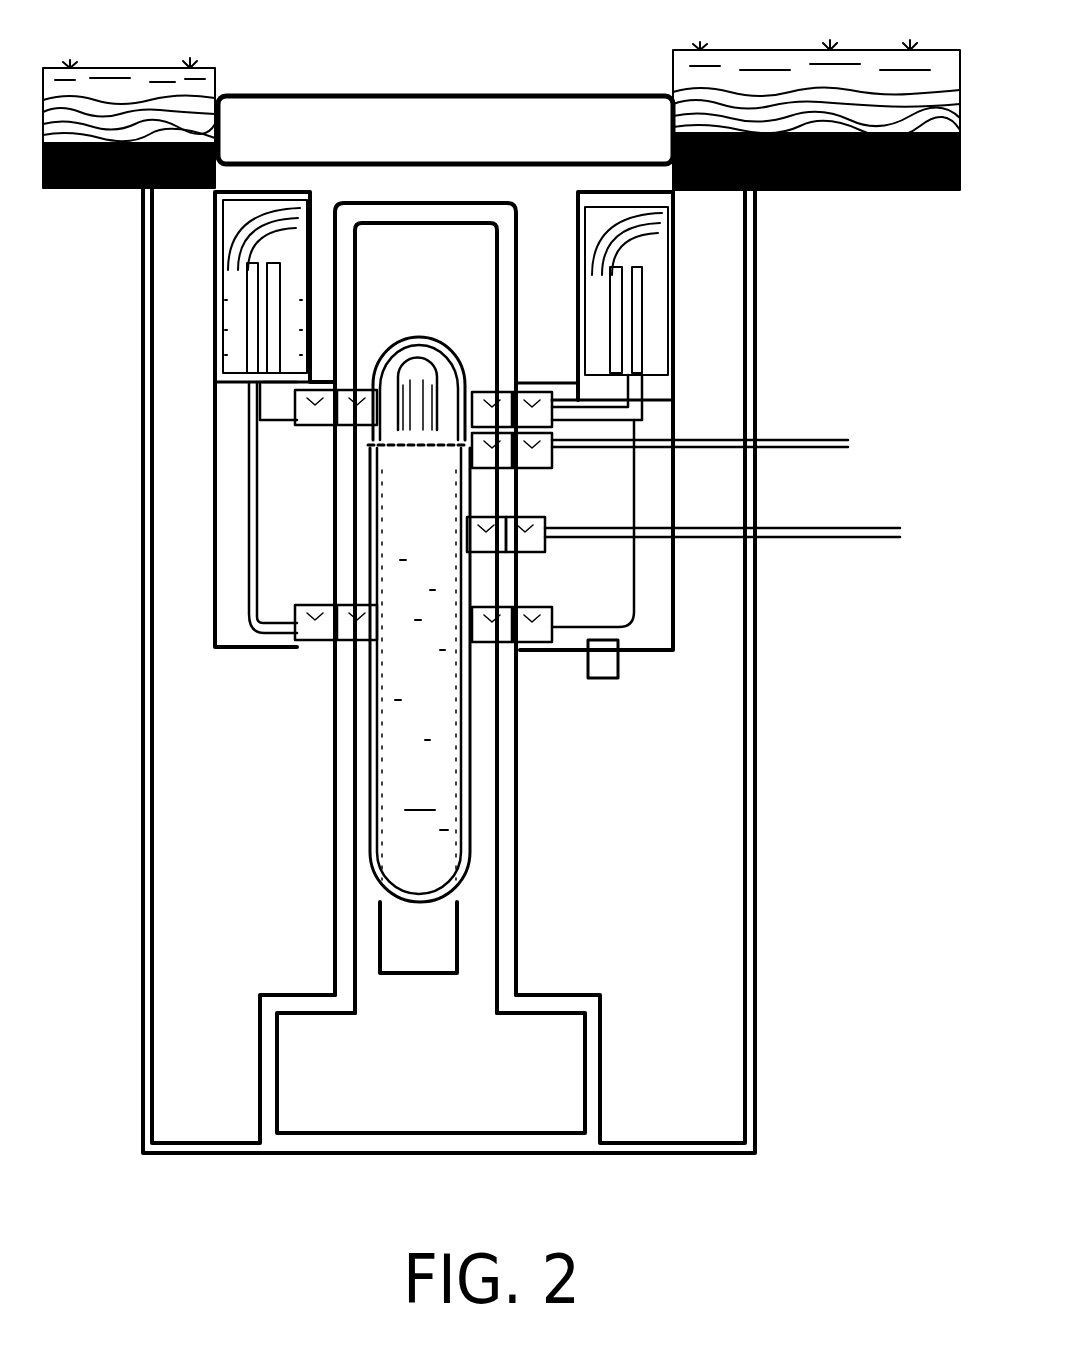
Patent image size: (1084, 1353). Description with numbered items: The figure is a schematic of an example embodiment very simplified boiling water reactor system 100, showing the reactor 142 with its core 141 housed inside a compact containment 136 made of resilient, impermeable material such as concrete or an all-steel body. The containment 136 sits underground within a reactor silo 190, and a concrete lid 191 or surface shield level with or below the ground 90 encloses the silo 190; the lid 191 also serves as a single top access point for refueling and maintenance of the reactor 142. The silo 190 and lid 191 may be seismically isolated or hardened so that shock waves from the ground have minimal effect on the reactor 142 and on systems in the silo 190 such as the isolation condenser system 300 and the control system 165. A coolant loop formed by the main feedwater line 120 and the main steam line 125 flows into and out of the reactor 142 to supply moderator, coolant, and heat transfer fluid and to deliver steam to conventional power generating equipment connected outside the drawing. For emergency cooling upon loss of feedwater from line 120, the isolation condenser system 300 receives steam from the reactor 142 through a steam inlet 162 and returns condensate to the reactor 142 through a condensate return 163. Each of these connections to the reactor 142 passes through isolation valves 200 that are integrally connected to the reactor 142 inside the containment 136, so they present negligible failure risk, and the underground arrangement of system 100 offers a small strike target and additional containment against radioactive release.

The reactor system 100 is at (529, 670).
The ground 90 is at (752, 63).
The concrete lid 191 is at (417, 128).
The reactor silo 190 is at (747, 920).
The containment 136 is at (338, 943).
The core 141 is at (415, 775).
The reactor 142 is at (470, 788).
The isolation condenser system 300 is at (238, 272).
The steam inlet 162 is at (279, 405).
The condensate return 163 is at (257, 533).
The main steam line 125 is at (822, 440).
The main feedwater line 120 is at (822, 540).
The control system 165 is at (600, 660).
The isolation valves 200 is at (322, 410).